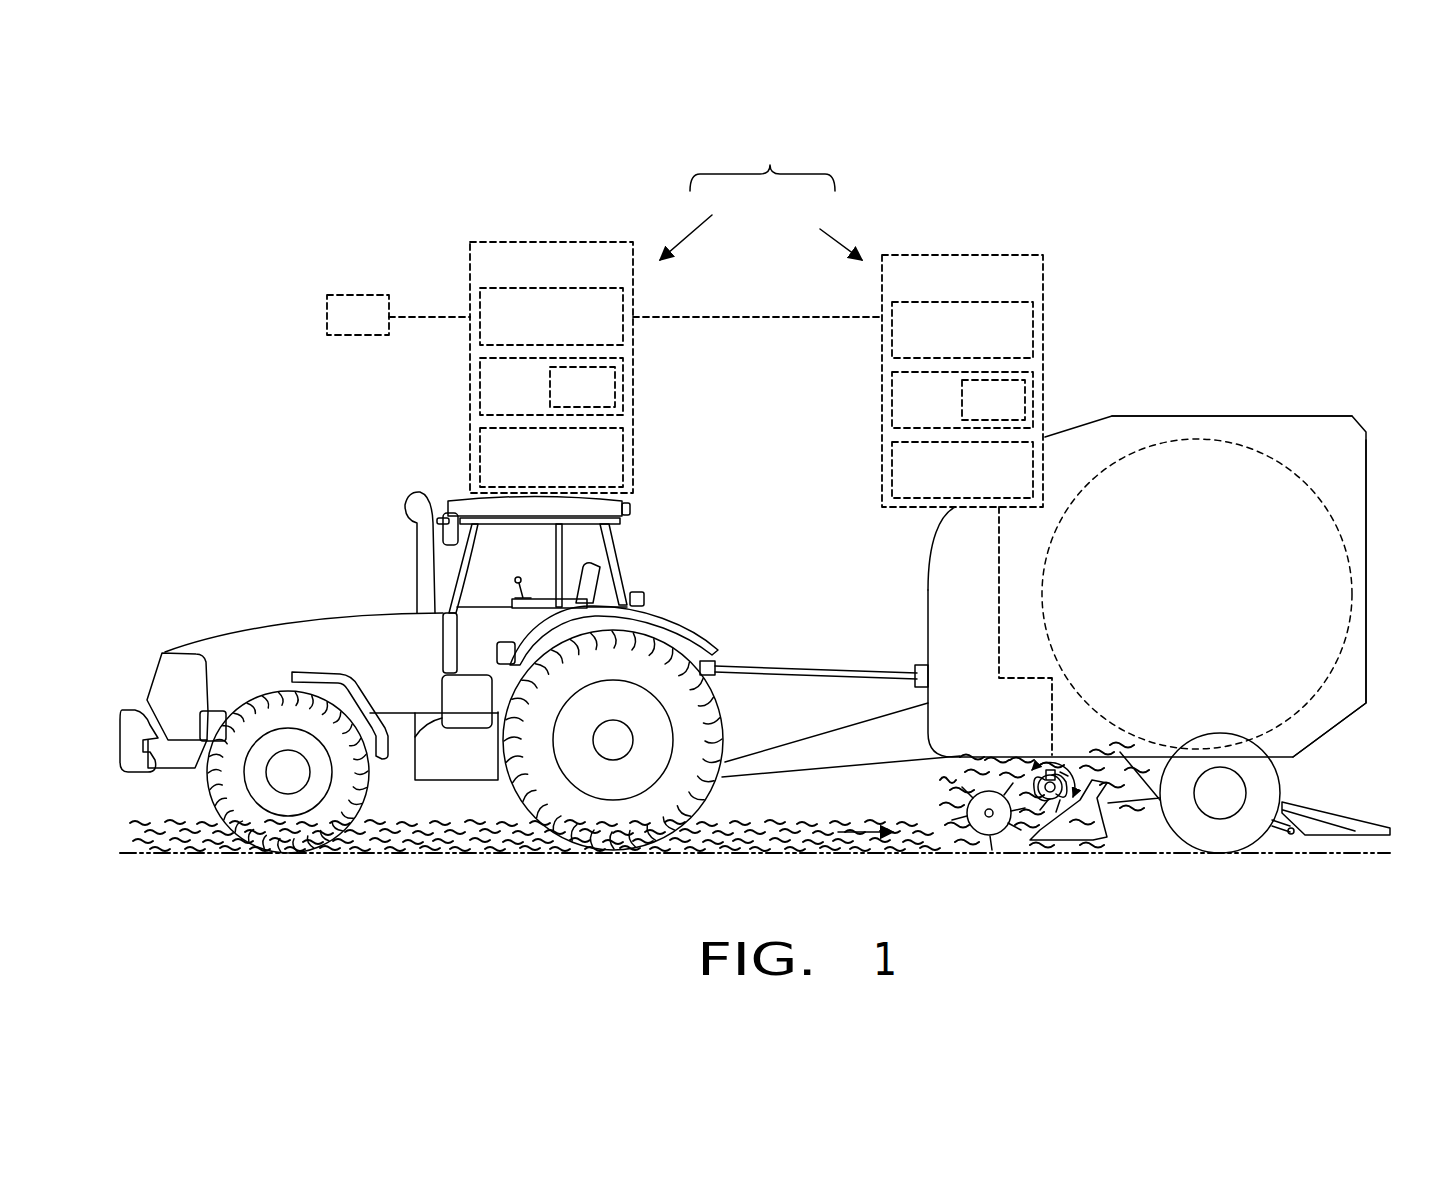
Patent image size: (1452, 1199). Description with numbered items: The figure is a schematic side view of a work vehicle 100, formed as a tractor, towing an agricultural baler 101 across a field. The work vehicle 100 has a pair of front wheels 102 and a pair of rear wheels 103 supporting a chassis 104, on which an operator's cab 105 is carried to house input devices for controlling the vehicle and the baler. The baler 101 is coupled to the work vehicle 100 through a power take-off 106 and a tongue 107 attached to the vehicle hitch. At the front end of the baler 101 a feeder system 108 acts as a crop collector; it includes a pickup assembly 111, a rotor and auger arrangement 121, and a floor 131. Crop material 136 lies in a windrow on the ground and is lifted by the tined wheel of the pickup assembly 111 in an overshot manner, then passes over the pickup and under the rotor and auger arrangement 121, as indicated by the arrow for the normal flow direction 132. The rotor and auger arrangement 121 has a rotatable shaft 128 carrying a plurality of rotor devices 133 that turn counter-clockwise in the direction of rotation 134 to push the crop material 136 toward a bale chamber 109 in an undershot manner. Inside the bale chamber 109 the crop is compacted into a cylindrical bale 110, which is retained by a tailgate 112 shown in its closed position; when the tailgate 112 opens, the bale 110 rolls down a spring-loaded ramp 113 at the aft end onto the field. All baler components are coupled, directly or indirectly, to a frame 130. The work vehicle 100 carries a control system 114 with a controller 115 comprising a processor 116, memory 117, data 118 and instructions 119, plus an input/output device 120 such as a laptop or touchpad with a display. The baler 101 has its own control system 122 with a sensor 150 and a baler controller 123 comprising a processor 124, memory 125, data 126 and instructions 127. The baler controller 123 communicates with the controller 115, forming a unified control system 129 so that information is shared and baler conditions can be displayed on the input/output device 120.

The work vehicle 100 is at (262, 588).
The baler 101 is at (1113, 403).
The front wheels 102 is at (210, 787).
The rear wheels 103 is at (703, 790).
The chassis 104 is at (440, 776).
The operator's cab 105 is at (490, 523).
The power take-off (PTO) 106 is at (770, 663).
The tongue 107 is at (800, 740).
The feeder system 108 is at (930, 803).
The bale chamber 109 is at (1242, 437).
The bale 110 is at (1328, 510).
The pickup assembly 111 is at (980, 835).
The tailgate 112 is at (1360, 414).
The ramp 113 is at (1358, 818).
The control system 114 is at (705, 222).
The controller 115 is at (676, 367).
The processor 116 is at (551, 316).
The memory 117 is at (551, 386).
The data 118 is at (582, 387).
The instructions 119 is at (551, 457).
The input/output device 120 is at (398, 315).
The rotor and auger arrangement 121 is at (1080, 815).
The control system 122 is at (819, 229).
The baler controller 123 is at (962, 381).
The processor 124 is at (962, 330).
The memory 125 is at (962, 400).
The data 126 is at (993, 400).
The instructions 127 is at (962, 470).
The rotatable shaft 128 is at (1045, 800).
The unified control system 129 is at (762, 156).
The frame 130 is at (1130, 762).
The floor 131 is at (1058, 812).
The flow direction 132 is at (890, 840).
The rotor devices 133 is at (1063, 773).
The direction of rotation 134 is at (1043, 760).
The crop material 136 is at (413, 842).
The sensor 150 is at (1063, 765).